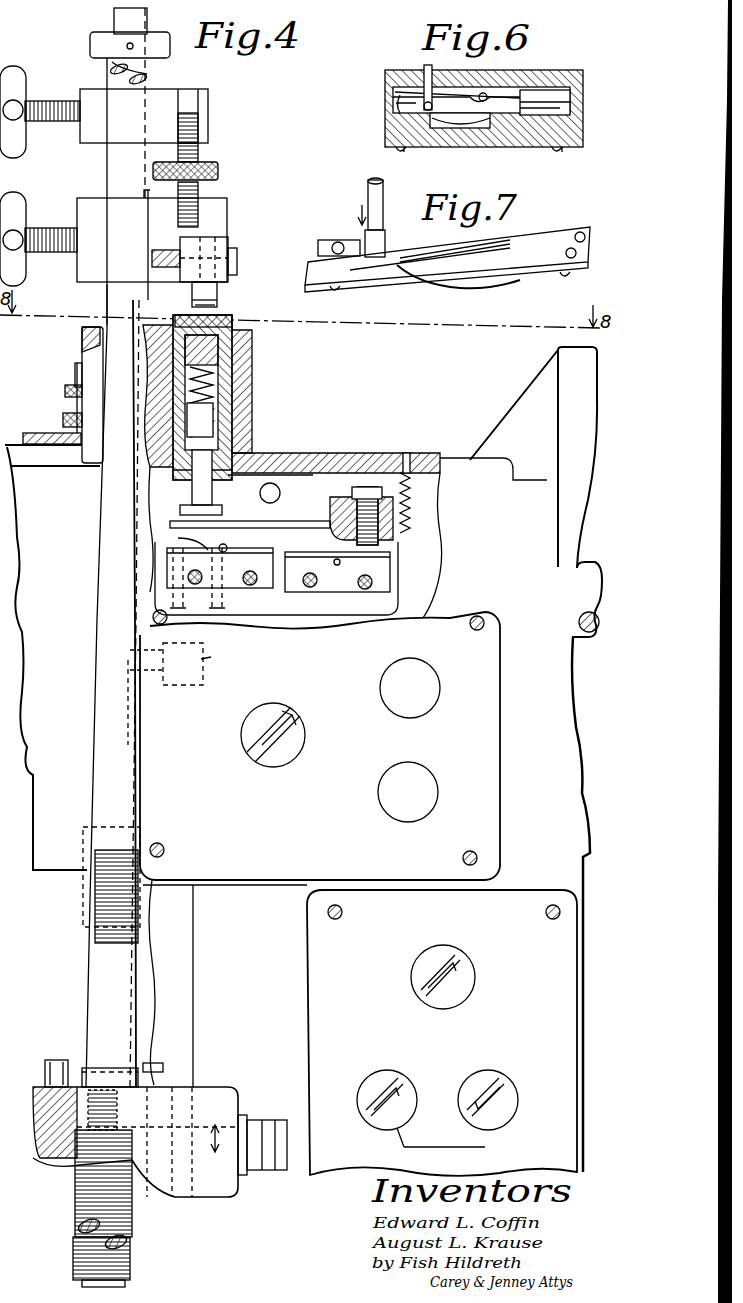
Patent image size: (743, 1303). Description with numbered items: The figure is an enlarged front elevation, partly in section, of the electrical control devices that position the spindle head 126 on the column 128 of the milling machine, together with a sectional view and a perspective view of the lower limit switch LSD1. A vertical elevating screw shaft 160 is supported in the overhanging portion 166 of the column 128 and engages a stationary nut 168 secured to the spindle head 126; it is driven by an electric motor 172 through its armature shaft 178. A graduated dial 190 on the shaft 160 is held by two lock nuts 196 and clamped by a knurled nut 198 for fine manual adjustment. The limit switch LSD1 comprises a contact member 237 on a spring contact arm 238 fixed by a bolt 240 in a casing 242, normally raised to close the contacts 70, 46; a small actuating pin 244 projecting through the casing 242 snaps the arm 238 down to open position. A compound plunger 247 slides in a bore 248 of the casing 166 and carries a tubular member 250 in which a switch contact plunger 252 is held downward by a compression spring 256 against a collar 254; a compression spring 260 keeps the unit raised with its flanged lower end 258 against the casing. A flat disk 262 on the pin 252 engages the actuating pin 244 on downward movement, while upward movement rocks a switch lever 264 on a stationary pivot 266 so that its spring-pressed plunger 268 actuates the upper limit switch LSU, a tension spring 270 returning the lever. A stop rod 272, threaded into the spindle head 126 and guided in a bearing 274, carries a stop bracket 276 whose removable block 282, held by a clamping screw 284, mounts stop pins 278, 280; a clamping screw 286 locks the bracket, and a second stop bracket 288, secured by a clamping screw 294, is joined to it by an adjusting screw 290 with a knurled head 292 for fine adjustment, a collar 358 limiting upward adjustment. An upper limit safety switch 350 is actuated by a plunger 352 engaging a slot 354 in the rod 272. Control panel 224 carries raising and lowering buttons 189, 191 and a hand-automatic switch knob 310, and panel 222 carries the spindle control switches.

In FIG. 4, the collar 358 is at (92, 45).
In FIG. 4, the clamping screw 294 is at (65, 100).
In FIG. 4, the stop rod 272 is at (145, 80).
In FIG. 4, the second stop bracket 288 is at (205, 106).
In FIG. 4, the adjusting screw 290 is at (200, 152).
In FIG. 4, the stop bracket 276 is at (96, 205).
In FIG. 4, the knurled head 292 is at (220, 175).
In FIG. 4, the clamping screw 286 is at (58, 228).
In FIG. 4, the removable block 282 is at (215, 240).
In FIG. 4, the clamping screw 284 is at (237, 260).
In FIG. 4, the bearing 274 is at (106, 322).
In FIG. 4, the stop pin 280 is at (192, 298).
In FIG. 4, the stop pin 278 is at (217, 298).
In FIG. 4, the compound plunger 247 is at (172, 322).
In FIG. 4, the bore 248 is at (180, 333).
In FIG. 4, the tubular member 250 is at (250, 343).
In FIG. 4, the compression spring 256 is at (215, 377).
In FIG. 4, the compression spring 260 is at (215, 408).
In FIG. 4, the flanged lower end 258 is at (185, 475).
In FIG. 4, the collar 254 is at (185, 495).
In FIG. 4, the switch contact plunger 252 is at (192, 490).
In FIG. 4, the actuating pin 244 is at (218, 548).
In FIG. 6, the actuating pin 244 is at (424, 66).
In FIG. 7, the actuating pin 244 is at (368, 200).
In FIG. 4, the flat disk 262 is at (215, 531).
In FIG. 4, the stationary pivot 266 is at (257, 487).
In FIG. 4, the switch lever 264 is at (332, 487).
In FIG. 4, the spring-pressed plunger 268 is at (367, 537).
In FIG. 4, the tension spring 270 is at (412, 510).
In FIG. 4, the electric motor 172 is at (575, 428).
In FIG. 4, the armature shaft 178 is at (585, 583).
In FIG. 4, the lower limit switch LSD1 is at (230, 582).
In FIG. 6, the lower limit switch LSD1 is at (472, 145).
In FIG. 7, the lower limit switch LSD1 is at (535, 225).
In FIG. 4, the upper limit switch LSU is at (375, 570).
In FIG. 4, the dial 190 is at (58, 440).
In FIG. 4, the overhanging portion 166 is at (93, 455).
In FIG. 4, the lock nuts 196 is at (75, 372).
In FIG. 4, the knurled nut 198 is at (65, 392).
In FIG. 4, the control panel 224 is at (487, 728).
In FIG. 4, the raising switch button 189 is at (440, 696).
In FIG. 4, the lowering switch button 191 is at (436, 787).
In FIG. 4, the hand-automatic switch knob 310 is at (285, 761).
In FIG. 4, the upper limit safety switch 350 is at (180, 685).
In FIG. 4, the plunger 352 is at (136, 648).
In FIG. 4, the slot 354 is at (135, 727).
In FIG. 4, the panel 222 is at (315, 907).
In FIG. 4, the column 128 is at (187, 968).
In FIG. 4, the spindle head 126 is at (210, 1102).
In FIG. 4, the stationary nut 168 is at (155, 1085).
In FIG. 4, the elevating screw shaft 160 is at (128, 1240).
In FIG. 6, the casing 242 is at (393, 76).
In FIG. 6, the bolt 240 is at (395, 110).
In FIG. 7, the bolt 240 is at (350, 240).
In FIG. 6, the spring contact arm 238 is at (520, 88).
In FIG. 7, the spring contact arm 238 is at (500, 236).
In FIG. 6, the contact member 237 is at (570, 106).
In FIG. 7, the contact member 237 is at (515, 285).
In FIG. 6, the contact 70 is at (403, 150).
In FIG. 7, the contact 70 is at (345, 290).
In FIG. 6, the contact 46 is at (562, 152).
In FIG. 7, the contact 46 is at (570, 275).